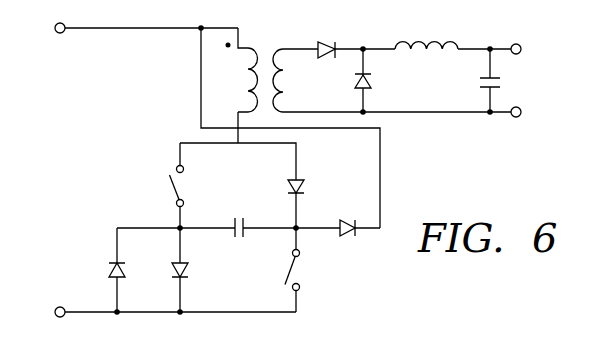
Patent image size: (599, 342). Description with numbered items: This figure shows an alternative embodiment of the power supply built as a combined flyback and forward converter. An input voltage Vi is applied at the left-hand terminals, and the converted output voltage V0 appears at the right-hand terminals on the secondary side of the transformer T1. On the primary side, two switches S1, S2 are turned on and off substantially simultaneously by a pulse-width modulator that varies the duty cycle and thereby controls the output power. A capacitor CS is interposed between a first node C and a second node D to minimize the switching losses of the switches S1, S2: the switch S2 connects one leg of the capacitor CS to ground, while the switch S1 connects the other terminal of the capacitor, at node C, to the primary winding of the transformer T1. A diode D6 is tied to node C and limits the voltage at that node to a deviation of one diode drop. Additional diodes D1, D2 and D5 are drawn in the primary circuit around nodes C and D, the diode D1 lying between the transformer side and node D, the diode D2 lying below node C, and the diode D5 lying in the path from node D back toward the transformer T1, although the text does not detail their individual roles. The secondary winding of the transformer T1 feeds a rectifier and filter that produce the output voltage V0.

The transformer T1 is at (255, 70).
The switch S1 is at (166, 186).
The switch S2 is at (305, 270).
The diode D1 is at (283, 186).
The diode D2 is at (165, 271).
The diode D5 is at (347, 240).
The diode D6 is at (103, 271).
The capacitor CS is at (235, 242).
The node C is at (186, 238).
The node D is at (303, 219).
The input voltage Vi is at (49, 169).
The output voltage V0 is at (532, 80).